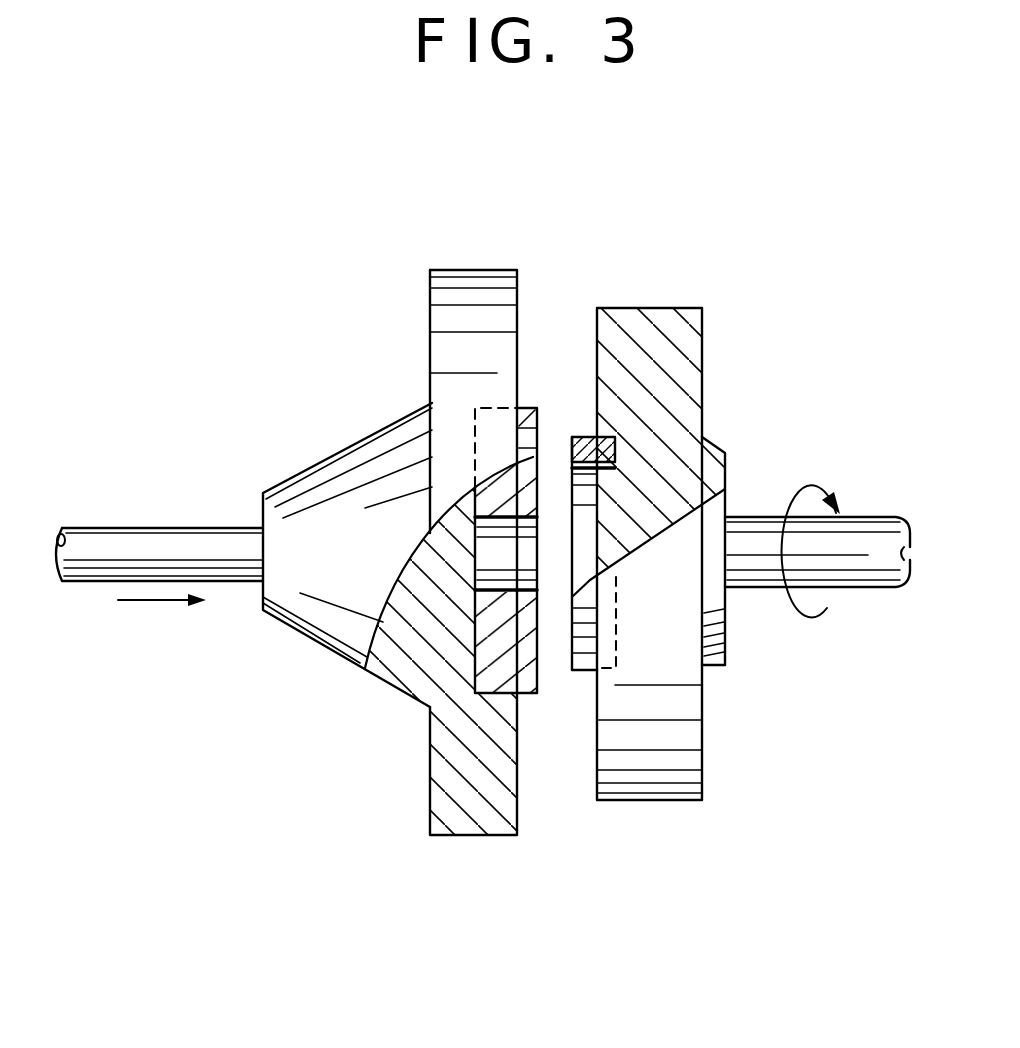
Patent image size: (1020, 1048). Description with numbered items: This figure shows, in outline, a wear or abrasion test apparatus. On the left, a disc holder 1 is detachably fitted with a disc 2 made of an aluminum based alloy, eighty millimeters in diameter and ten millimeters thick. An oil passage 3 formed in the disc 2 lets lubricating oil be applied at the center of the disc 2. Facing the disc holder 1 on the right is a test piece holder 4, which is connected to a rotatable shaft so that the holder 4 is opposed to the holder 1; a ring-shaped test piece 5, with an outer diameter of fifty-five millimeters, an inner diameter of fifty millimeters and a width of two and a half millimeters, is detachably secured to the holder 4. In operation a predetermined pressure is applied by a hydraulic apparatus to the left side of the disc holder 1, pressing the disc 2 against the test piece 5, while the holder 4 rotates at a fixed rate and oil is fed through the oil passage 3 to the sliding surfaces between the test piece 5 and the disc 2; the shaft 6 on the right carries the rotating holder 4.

The disc holder 1 is at (465, 300).
The disc 2 is at (527, 420).
The oil passage 3 is at (428, 510).
The test piece holder 4 is at (650, 330).
The test piece 5 is at (583, 673).
The rotating shaft 6 is at (866, 527).